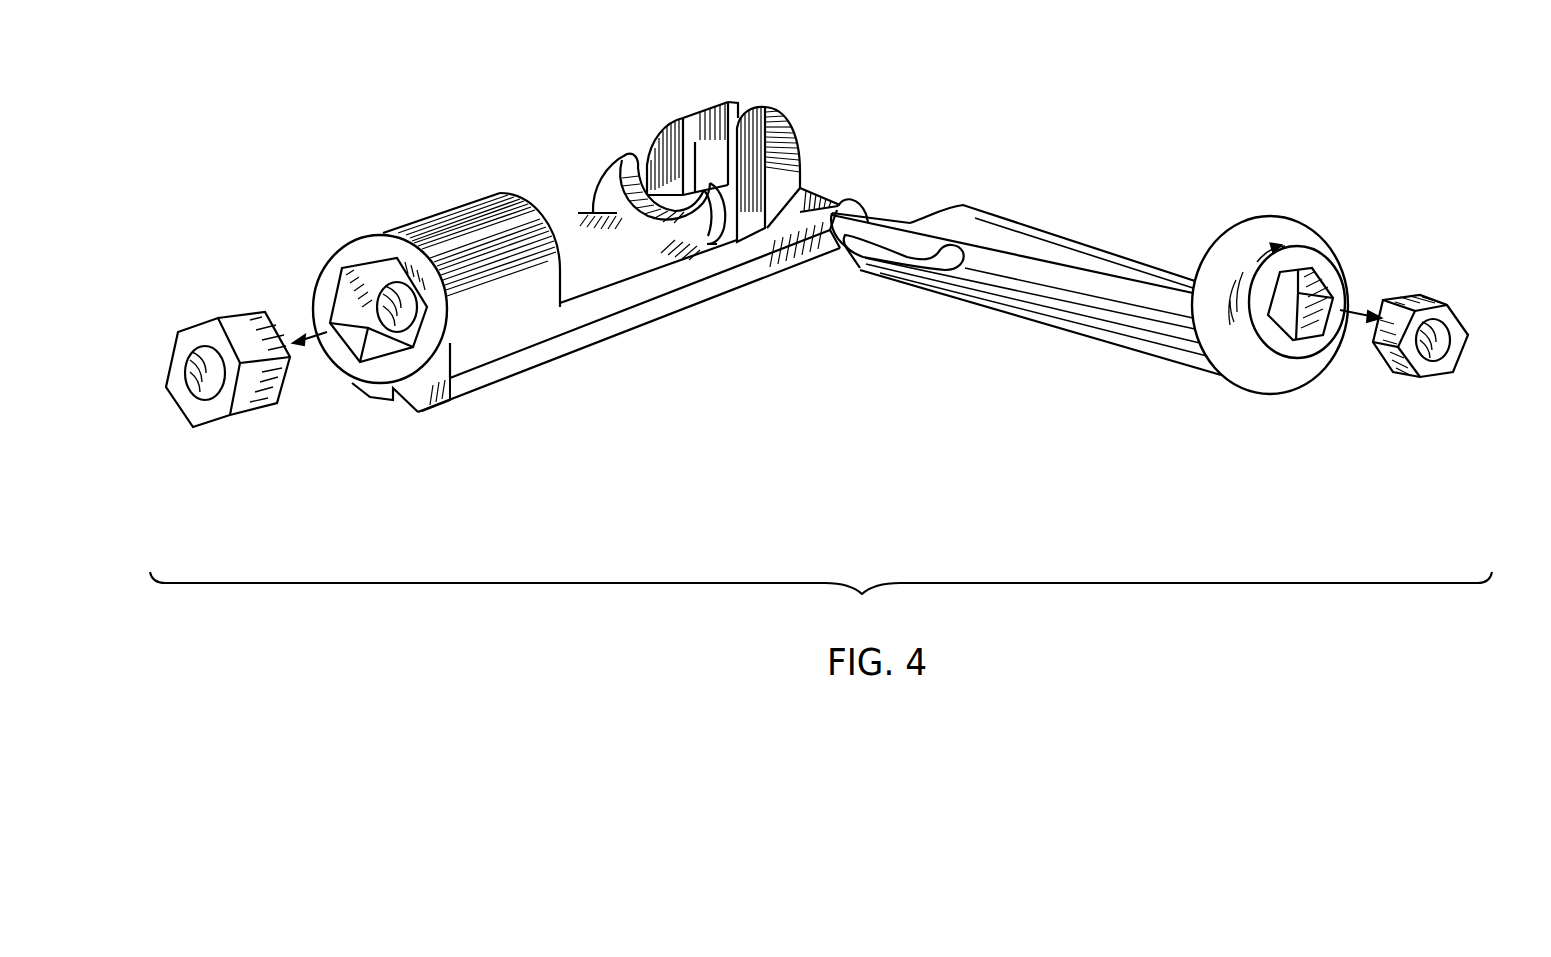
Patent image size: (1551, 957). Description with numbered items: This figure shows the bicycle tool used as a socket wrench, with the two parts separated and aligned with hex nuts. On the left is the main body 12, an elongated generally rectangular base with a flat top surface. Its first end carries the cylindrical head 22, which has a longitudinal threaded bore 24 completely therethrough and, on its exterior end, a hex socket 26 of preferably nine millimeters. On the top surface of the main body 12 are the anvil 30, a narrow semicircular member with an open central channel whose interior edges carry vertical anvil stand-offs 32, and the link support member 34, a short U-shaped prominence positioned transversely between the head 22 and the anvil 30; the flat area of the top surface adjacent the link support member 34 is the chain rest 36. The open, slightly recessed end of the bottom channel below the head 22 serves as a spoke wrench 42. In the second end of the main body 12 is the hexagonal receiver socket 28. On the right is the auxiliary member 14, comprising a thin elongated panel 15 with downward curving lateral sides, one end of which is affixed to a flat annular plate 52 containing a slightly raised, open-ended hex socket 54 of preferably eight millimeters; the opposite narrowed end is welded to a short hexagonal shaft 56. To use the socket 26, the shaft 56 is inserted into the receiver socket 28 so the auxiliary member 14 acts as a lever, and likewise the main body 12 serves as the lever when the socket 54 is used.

The main body 12 is at (644, 334).
The auxiliary member 14 is at (1042, 216).
The elongated panel 15 is at (1027, 323).
The cylindrical head 22 is at (438, 212).
The threaded bore 24 is at (380, 267).
The hex socket 26 is at (367, 347).
The receiver socket 28 is at (840, 208).
The anvil 30 is at (767, 118).
The anvil stand-offs 32 is at (680, 123).
The link support member 34 is at (707, 187).
The chain rest 36 is at (580, 223).
The spoke wrench 42 is at (383, 402).
The annular plate 52 is at (1252, 228).
The hex socket 54 is at (1298, 293).
The hexagonal shaft 56 is at (878, 225).